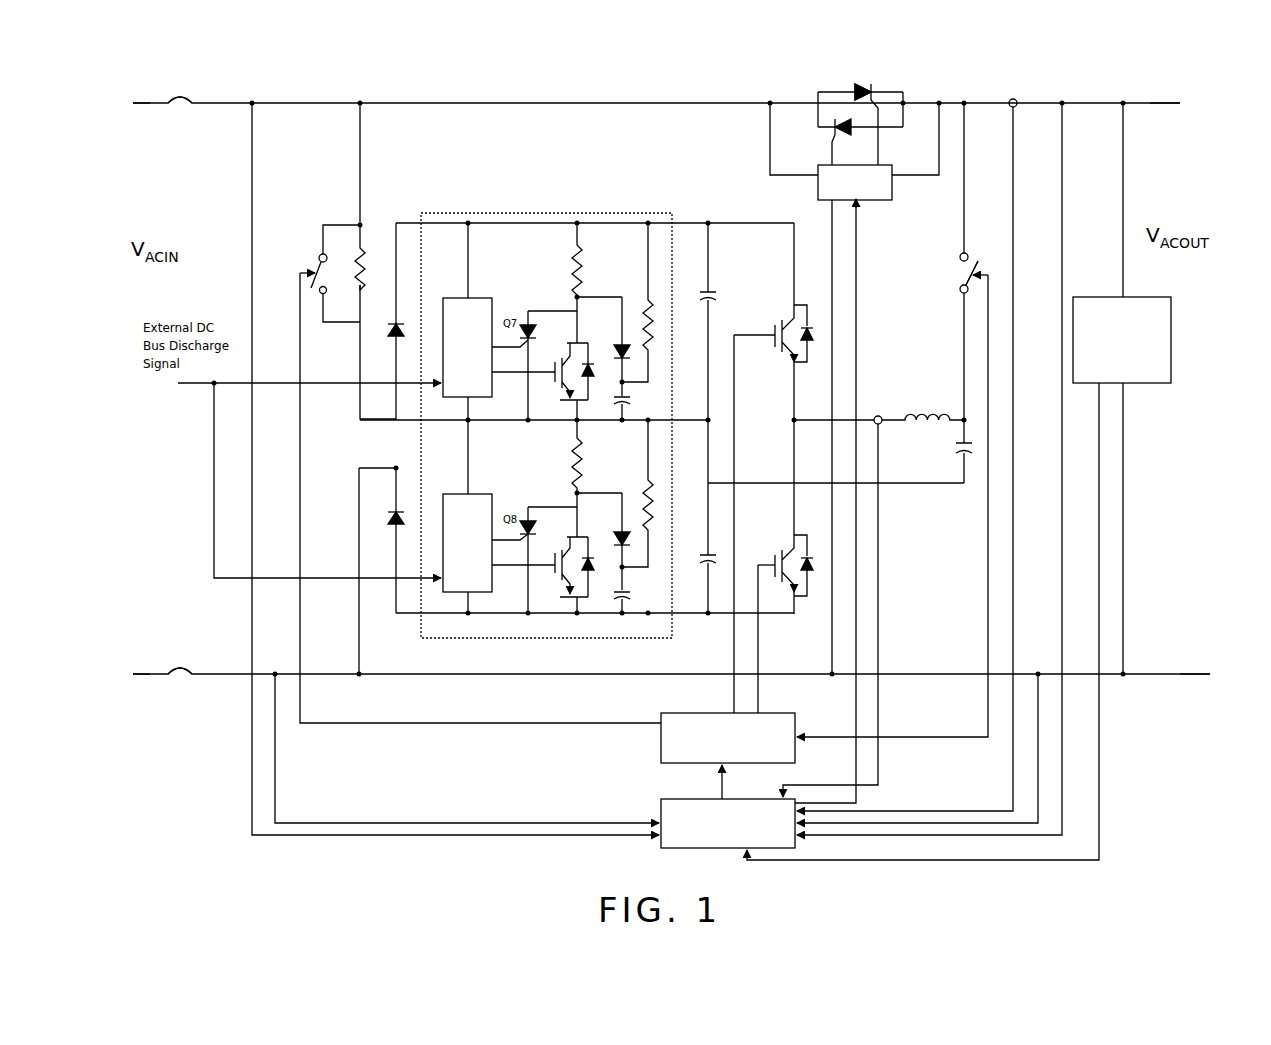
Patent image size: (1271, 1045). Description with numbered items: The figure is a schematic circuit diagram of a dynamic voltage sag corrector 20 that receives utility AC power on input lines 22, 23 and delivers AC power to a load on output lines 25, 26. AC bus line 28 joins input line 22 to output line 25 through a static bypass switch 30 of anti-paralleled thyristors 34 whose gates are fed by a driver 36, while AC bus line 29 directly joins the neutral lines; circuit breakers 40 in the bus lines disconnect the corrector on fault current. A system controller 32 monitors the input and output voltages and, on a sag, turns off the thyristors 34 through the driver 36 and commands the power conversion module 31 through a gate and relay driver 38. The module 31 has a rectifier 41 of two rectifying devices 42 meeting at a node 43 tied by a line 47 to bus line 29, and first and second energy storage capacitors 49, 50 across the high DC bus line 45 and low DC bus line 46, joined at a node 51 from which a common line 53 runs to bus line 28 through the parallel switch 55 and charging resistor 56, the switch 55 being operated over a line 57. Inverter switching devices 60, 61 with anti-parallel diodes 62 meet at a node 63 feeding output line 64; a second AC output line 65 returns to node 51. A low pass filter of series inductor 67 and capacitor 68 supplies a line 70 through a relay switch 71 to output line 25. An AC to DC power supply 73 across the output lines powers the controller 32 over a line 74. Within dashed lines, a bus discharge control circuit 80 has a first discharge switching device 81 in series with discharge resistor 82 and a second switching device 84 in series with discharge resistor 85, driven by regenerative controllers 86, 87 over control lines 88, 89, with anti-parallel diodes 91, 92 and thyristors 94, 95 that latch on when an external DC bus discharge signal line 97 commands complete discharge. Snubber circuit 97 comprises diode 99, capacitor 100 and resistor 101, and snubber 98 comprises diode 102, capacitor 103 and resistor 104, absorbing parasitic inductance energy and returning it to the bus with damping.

The dynamic voltage sag corrector 20 is at (668, 97).
The AC power input line 22 is at (141, 101).
The AC power input line 23 is at (144, 682).
The output line 25 is at (1182, 102).
The output line 26 is at (1163, 674).
The AC bus line 28 is at (523, 102).
The AC bus line 29 is at (486, 674).
The bypass switch 30 is at (912, 93).
The power conversion module 31 is at (752, 221).
The system controller 32 is at (660, 805).
The thyristors 34 is at (849, 118).
The driver 36 is at (873, 201).
The gate and relay driver 38 is at (660, 750).
The circuit breakers 40 is at (182, 108).
The rectifier 41 is at (398, 212).
The rectifying devices 42 is at (393, 338).
The node 43 is at (393, 467).
The high DC bus line 45 is at (416, 224).
The low DC bus line 46 is at (403, 636).
The line 47 is at (358, 618).
The first energy storage capacitor 49 is at (712, 303).
The second energy storage capacitor 50 is at (712, 567).
The node 51 is at (705, 419).
The common line 53 is at (497, 424).
The switch 55 is at (316, 256).
The resistor 56 is at (358, 267).
The line 57 is at (452, 725).
The first controllable inverter switching device 60 is at (772, 337).
The second inverter switching device 61 is at (772, 567).
The anti-parallel diodes 62 is at (808, 332).
The node 63 is at (793, 422).
The output line 64 is at (870, 416).
The second AC output line 65 is at (902, 486).
The series inductor 67 is at (912, 415).
The capacitor 68 is at (967, 470).
The line 70 is at (962, 333).
The relay switch 71 is at (968, 281).
The AC to DC power supply 73 is at (1174, 345).
The line 74 is at (1100, 758).
The bus discharge control circuit 80 is at (541, 214).
The first DC bus discharge switching device 81 is at (555, 382).
The discharge resistor 82 is at (574, 280).
The second DC bus discharge switching device 84 is at (555, 578).
The discharge resistor 85 is at (574, 470).
The regenerative DC bus line control circuit 86 is at (488, 298).
The regenerative DC bus line control circuit 87 is at (460, 495).
The control line 88 is at (513, 380).
The control line 89 is at (508, 578).
The anti-parallel diode 91 is at (591, 368).
The anti-parallel diode 92 is at (591, 566).
The first thyristor 94 is at (552, 332).
The second thyristor 95 is at (552, 527).
The external DC bus discharge signal line 97 is at (193, 390).
The snubber circuit 98 is at (620, 470).
The diode 99 is at (636, 352).
The capacitor 100 is at (622, 404).
The resistor 101 is at (652, 305).
The diode 102 is at (642, 538).
The capacitor 103 is at (644, 598).
The resistor 104 is at (652, 502).